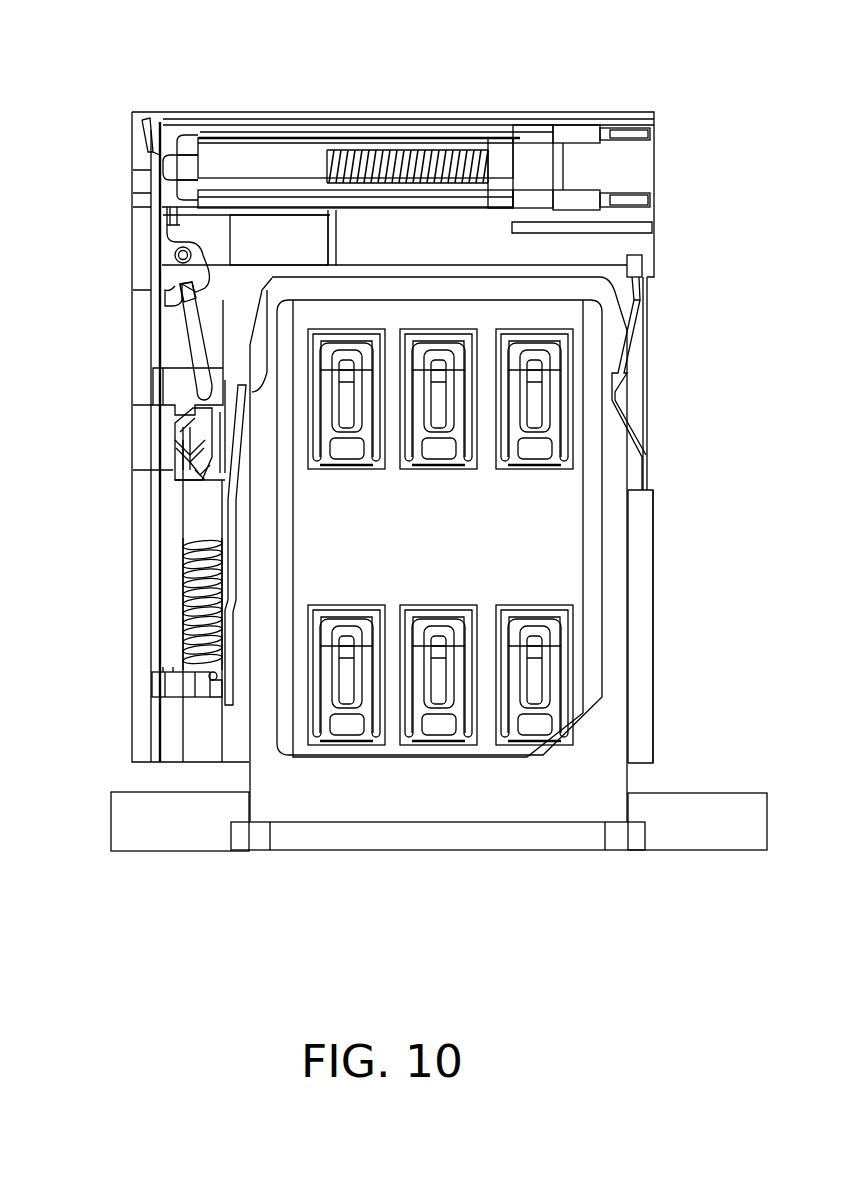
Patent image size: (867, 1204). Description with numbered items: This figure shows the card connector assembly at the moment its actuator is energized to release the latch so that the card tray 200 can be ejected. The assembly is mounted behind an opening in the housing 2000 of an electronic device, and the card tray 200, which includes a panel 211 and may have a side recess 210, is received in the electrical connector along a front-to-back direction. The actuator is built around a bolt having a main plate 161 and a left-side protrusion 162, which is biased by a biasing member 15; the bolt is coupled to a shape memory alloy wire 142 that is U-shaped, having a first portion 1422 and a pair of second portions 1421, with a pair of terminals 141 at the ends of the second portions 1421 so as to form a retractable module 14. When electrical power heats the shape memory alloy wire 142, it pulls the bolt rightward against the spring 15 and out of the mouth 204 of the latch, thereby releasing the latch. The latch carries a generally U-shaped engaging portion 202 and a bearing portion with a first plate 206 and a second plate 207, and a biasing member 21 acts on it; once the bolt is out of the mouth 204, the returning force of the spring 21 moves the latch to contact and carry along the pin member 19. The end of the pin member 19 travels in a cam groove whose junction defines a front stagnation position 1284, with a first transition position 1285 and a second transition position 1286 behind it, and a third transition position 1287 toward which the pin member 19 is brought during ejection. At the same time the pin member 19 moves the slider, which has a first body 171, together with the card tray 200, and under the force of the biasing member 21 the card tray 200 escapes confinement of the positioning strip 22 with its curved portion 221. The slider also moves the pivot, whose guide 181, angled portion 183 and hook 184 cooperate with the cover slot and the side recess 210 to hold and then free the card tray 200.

The retractable module 14 is at (525, 135).
The terminals 141 is at (623, 200).
The shape memory alloy wire 142 is at (447, 135).
The second portions 1421 is at (317, 200).
The first portion 1422 is at (178, 162).
The biasing member 15 is at (390, 150).
The main plate 161 is at (243, 165).
The left-side protrusion 162 is at (170, 168).
The first body 171 is at (243, 237).
The guide 181 is at (168, 222).
The angled portion 183 is at (160, 302).
The hook 184 is at (185, 540).
The pin member 19 is at (190, 340).
The engaging portion 202 is at (180, 390).
The mouth 204 is at (152, 178).
The first plate 206 is at (177, 683).
The second plate 207 is at (202, 690).
The biasing member 21 is at (202, 618).
The positioning strip 22 is at (645, 465).
The side recess 210 is at (615, 415).
The curved portion 221 is at (618, 383).
The card tray 200 is at (387, 795).
The panel 211 is at (537, 830).
The housing 2000 is at (700, 817).
The front stagnation position 1284 is at (235, 425).
The first transition position 1285 is at (180, 467).
The second transition position 1286 is at (183, 417).
The third transition position 1287 is at (190, 490).